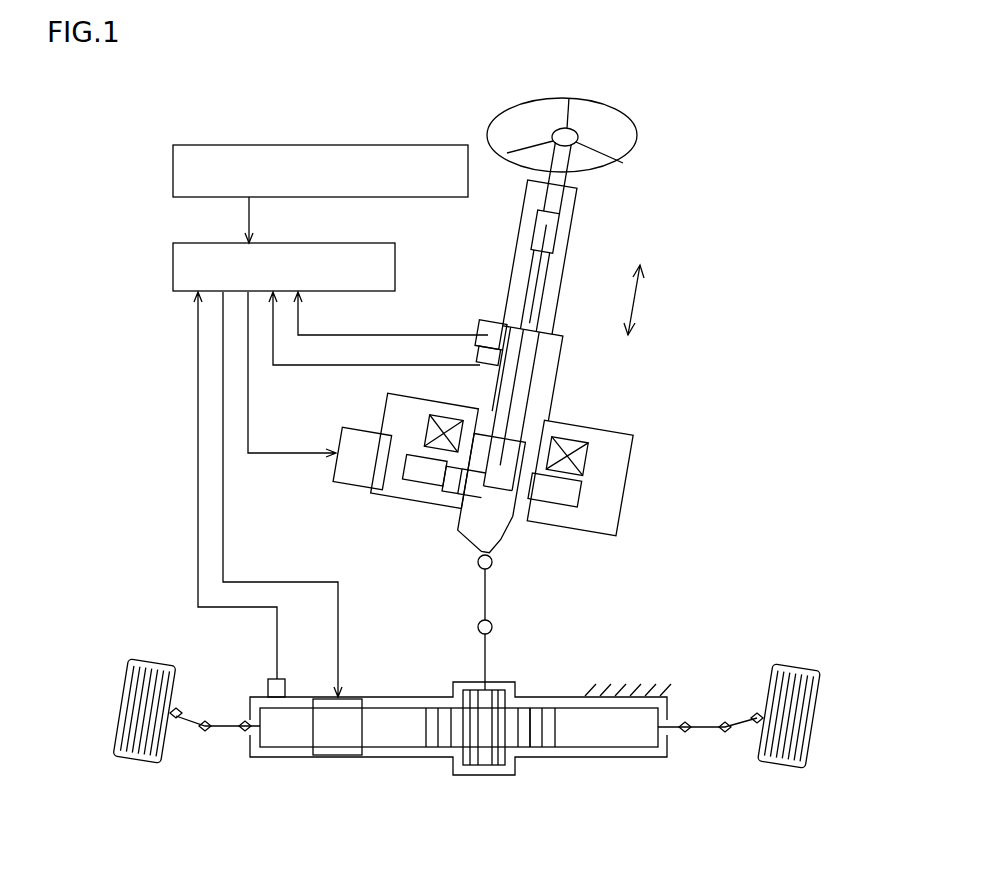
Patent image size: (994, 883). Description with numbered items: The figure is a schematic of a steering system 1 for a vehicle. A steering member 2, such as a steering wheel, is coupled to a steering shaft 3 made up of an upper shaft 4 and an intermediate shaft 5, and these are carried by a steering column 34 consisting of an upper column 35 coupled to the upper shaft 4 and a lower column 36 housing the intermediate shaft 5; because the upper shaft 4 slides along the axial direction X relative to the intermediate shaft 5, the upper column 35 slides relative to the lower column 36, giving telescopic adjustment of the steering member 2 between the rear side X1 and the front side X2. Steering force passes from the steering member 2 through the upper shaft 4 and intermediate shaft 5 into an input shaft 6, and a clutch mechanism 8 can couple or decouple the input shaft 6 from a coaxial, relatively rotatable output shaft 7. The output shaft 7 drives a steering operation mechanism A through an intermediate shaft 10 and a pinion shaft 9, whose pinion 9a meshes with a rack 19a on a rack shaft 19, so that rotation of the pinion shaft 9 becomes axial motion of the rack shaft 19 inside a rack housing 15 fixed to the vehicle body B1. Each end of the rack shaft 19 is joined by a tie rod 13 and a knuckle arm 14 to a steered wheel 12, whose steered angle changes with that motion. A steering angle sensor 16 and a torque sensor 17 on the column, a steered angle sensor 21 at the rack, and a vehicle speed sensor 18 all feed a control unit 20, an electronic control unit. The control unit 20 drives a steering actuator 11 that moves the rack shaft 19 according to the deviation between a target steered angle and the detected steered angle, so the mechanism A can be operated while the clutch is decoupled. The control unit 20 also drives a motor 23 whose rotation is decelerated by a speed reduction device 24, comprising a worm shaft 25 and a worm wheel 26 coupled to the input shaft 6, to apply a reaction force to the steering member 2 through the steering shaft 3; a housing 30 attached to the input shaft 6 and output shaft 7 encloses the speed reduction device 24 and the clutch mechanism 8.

The steering system 1 is at (643, 191).
The steering member 2 is at (543, 97).
The steering shaft 3 is at (600, 235).
The upper shaft 4 is at (530, 179).
The intermediate shaft 5 is at (555, 266).
The input shaft 6 is at (547, 388).
The output shaft 7 is at (521, 530).
The clutch mechanism 8 is at (463, 500).
The pinion shaft 9 is at (473, 660).
The pinion 9a is at (472, 768).
The intermediate shaft 10 is at (490, 597).
The steering actuator 11 is at (340, 758).
The steered wheels 12 is at (137, 762).
The tie rods 13 is at (230, 724).
The knuckle arms 14 is at (190, 720).
The rack housing 15 is at (640, 758).
The steering angle sensor 16 is at (487, 326).
The torque sensor 17 is at (480, 368).
The vehicle speed sensor 18 is at (173, 170).
The rack shaft 19 is at (596, 762).
The rack 19a is at (538, 748).
The control unit 20 is at (173, 268).
The steered angle sensor 21 is at (273, 678).
The motor 23 is at (338, 468).
The speed reduction device 24 is at (435, 572).
The worm shaft 25 is at (411, 490).
The worm wheel 26 is at (428, 498).
The housing 30 is at (638, 427).
The steering column 34 is at (443, 224).
The upper column 35 is at (524, 222).
The lower column 36 is at (522, 264).
The steering operation mechanism A is at (557, 680).
The vehicle body B1 is at (668, 690).
The axial direction X is at (636, 298).
The rear side X1 is at (643, 256).
The front side X2 is at (627, 352).